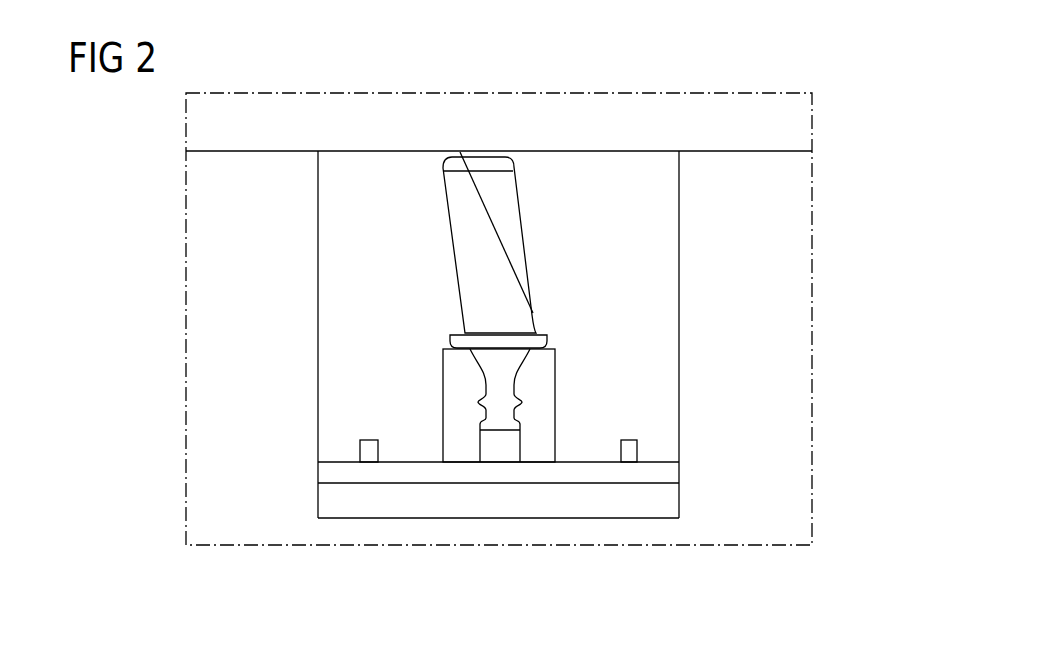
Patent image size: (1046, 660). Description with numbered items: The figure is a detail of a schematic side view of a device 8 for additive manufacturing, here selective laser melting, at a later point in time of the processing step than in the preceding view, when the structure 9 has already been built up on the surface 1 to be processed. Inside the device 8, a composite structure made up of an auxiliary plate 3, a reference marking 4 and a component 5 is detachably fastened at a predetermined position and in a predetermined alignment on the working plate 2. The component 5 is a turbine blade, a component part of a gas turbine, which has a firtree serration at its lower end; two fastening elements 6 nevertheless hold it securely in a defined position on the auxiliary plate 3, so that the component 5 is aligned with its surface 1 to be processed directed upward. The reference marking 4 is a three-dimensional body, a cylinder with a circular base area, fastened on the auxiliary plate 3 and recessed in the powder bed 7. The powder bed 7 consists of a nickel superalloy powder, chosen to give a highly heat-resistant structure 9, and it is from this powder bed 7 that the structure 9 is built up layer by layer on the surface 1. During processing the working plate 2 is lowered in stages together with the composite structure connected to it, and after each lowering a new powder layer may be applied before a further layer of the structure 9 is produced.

The surface to be processed 1 is at (457, 168).
The working plate 2 is at (665, 500).
The auxiliary plate 3 is at (665, 475).
The reference marking 4 is at (368, 452).
The component 5 is at (535, 243).
The fastening elements 6 is at (463, 448).
The powder bed 7 is at (630, 288).
The device for additive manufacturing 8 is at (368, 121).
The structure 9 is at (455, 160).